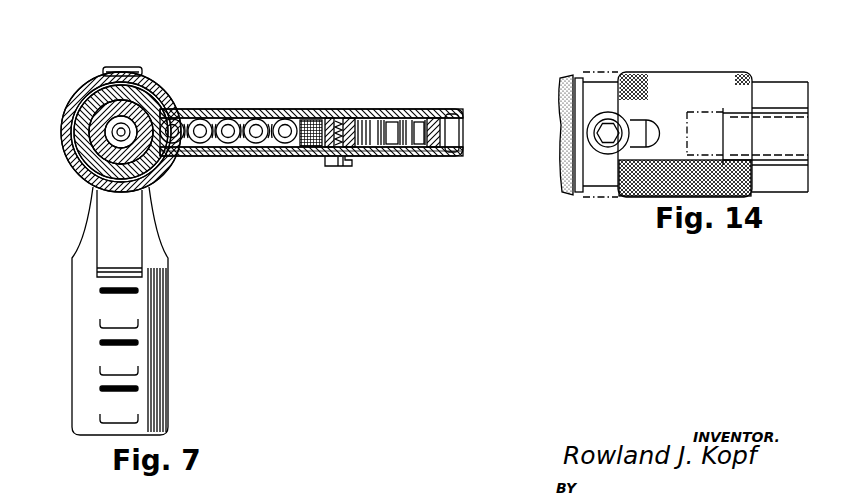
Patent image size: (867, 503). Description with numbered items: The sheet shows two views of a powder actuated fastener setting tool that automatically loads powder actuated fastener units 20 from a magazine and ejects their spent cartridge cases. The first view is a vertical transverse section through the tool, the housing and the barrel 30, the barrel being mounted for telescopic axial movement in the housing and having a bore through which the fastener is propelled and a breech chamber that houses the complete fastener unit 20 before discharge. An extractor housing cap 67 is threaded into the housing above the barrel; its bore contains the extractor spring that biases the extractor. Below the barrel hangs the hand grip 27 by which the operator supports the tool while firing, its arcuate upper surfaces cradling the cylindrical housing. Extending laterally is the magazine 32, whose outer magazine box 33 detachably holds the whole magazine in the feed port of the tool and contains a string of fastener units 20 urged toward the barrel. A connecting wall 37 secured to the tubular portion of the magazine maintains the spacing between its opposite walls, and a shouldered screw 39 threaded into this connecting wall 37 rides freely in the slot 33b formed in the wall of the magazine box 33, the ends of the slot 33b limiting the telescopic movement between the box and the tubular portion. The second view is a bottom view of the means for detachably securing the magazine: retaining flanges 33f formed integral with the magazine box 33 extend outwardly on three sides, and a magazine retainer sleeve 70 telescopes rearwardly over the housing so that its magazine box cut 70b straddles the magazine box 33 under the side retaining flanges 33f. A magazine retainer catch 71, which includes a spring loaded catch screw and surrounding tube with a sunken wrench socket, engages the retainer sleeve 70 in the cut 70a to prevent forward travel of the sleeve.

In FIG. 7, the powder actuated fastener unit 20 is at (93, 110).
In FIG. 7, the hand grip 27 is at (166, 350).
In FIG. 7, the barrel 30 is at (85, 176).
In FIG. 7, the magazine 32 is at (284, 102).
In FIG. 14, the magazine box 33 is at (765, 137).
In FIG. 7, the slot 33b is at (309, 155).
In FIG. 14, the retaining flange 33f is at (770, 108).
In FIG. 7, the connecting wall 37 is at (351, 120).
In FIG. 7, the shouldered screw 39 is at (343, 167).
In FIG. 7, the extractor housing cap 67 is at (125, 67).
In FIG. 14, the magazine retainer sleeve 70 is at (663, 78).
In FIG. 14, the cut 70a is at (634, 122).
In FIG. 14, the magazine box cut 70b is at (731, 117).
In FIG. 14, the magazine retainer catch 71 is at (600, 140).